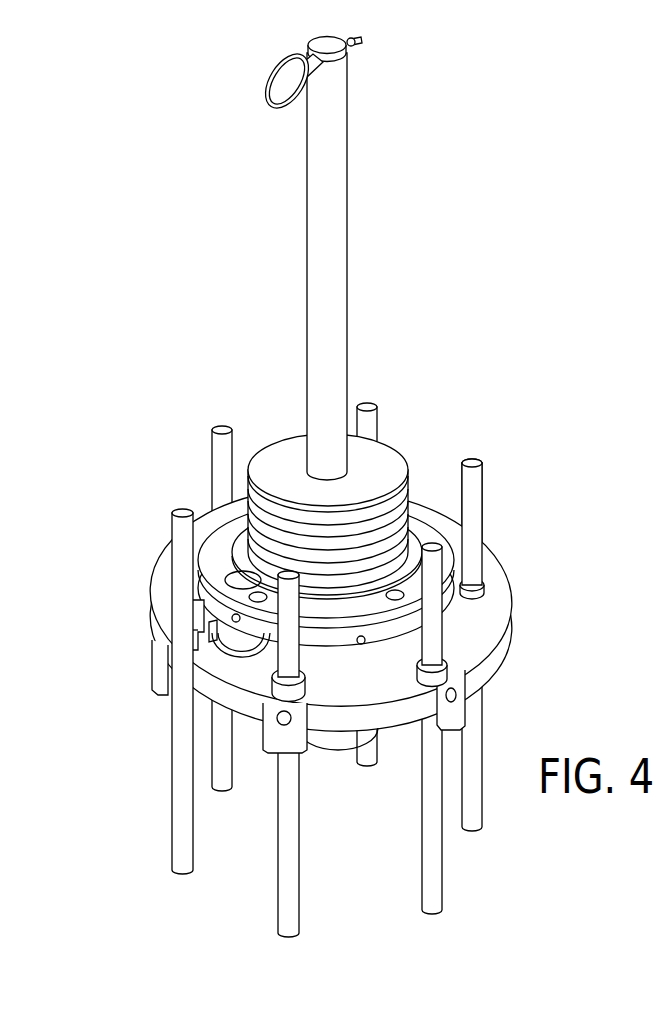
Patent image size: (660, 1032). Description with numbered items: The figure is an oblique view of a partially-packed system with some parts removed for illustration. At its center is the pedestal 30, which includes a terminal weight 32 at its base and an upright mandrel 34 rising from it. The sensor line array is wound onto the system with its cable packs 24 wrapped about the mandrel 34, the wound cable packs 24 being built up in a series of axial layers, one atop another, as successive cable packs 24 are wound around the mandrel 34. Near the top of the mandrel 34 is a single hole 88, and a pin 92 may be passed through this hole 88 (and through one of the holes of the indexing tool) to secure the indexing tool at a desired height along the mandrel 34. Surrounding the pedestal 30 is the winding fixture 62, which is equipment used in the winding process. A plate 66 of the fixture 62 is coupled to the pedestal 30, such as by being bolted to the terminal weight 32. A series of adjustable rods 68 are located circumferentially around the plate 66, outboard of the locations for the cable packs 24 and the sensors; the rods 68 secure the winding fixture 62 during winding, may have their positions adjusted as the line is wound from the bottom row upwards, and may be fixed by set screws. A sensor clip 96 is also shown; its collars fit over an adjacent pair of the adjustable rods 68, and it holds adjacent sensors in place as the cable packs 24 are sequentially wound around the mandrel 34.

The cable packs 24 is at (383, 458).
The pedestal 30 is at (330, 252).
The terminal weight 32 is at (419, 528).
The mandrel 34 is at (333, 113).
The winding fixture 62 is at (140, 702).
The plate 66 is at (482, 603).
The adjustable rods 68 is at (472, 497).
The hole 88 is at (308, 40).
The pin 92 is at (356, 41).
The sensor clip 96 is at (200, 655).